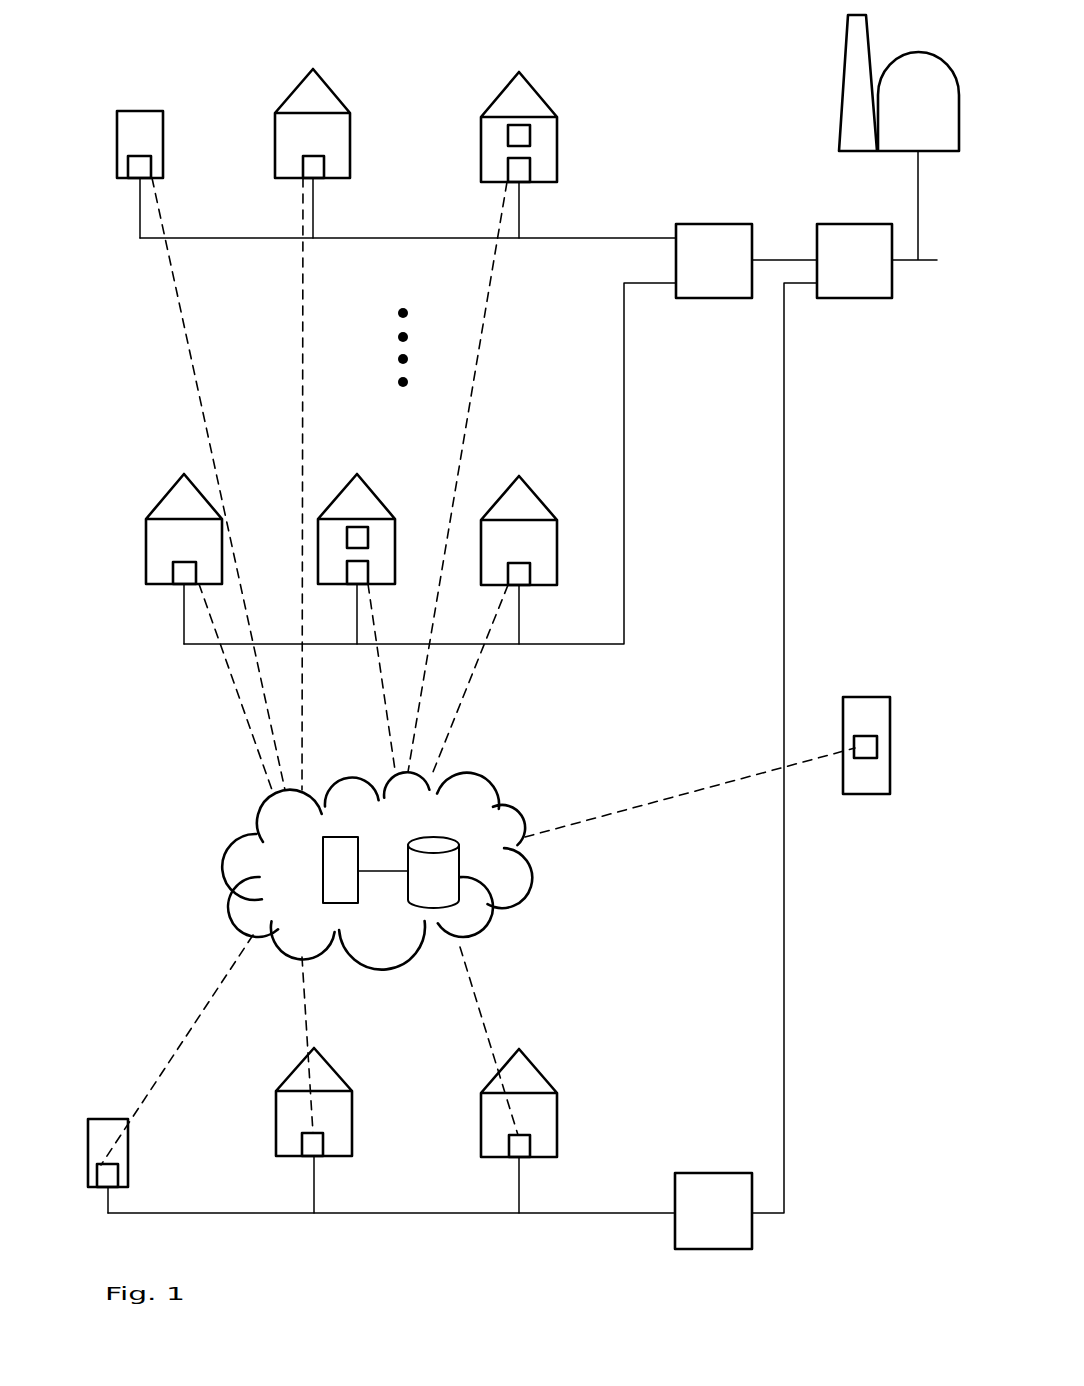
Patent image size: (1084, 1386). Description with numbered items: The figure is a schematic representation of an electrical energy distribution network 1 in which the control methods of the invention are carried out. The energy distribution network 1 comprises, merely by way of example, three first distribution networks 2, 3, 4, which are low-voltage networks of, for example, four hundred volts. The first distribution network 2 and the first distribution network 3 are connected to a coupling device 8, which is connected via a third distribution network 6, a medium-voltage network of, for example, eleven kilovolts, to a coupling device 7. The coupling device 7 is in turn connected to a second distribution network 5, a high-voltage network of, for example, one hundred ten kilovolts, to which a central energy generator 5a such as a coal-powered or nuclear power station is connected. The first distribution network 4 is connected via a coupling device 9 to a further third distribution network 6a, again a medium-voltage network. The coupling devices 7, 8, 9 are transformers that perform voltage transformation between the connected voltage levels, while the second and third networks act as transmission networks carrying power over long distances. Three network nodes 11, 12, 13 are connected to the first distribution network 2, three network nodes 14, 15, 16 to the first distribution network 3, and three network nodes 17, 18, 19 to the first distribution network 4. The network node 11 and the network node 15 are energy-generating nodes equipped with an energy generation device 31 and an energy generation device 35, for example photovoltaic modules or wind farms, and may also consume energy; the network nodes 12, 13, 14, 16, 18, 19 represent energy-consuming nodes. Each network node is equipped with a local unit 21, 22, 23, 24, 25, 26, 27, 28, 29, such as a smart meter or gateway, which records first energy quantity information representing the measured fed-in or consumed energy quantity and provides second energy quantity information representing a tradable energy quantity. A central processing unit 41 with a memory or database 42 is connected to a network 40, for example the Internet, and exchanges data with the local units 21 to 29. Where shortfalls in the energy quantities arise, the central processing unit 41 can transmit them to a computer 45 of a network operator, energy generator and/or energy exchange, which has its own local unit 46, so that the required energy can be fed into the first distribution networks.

The energy distribution network 1 is at (691, 76).
The first distribution network 2 is at (620, 238).
The first distribution network 3 is at (625, 450).
The first distribution network 4 is at (632, 1213).
The second distribution network 5 is at (905, 262).
The central energy generator 5a is at (918, 52).
The third distribution network 6 is at (775, 260).
The third distribution network 6a is at (784, 530).
The coupling device 7 is at (855, 298).
The coupling device 8 is at (712, 224).
The coupling device 9 is at (715, 1173).
The network node 11 is at (540, 93).
The network node 12 is at (338, 97).
The network node 13 is at (163, 125).
The network node 14 is at (543, 502).
The network node 15 is at (380, 492).
The network node 16 is at (165, 497).
The network node 17 is at (543, 1075).
The network node 18 is at (340, 1080).
The network node 19 is at (88, 1140).
The local unit 21 is at (530, 170).
The local unit 22 is at (325, 172).
The local unit 23 is at (152, 168).
The local unit 24 is at (530, 573).
The local unit 25 is at (368, 570).
The local unit 26 is at (173, 572).
The local unit 27 is at (530, 1145).
The local unit 28 is at (323, 1147).
The local unit 29 is at (118, 1175).
The energy generation device 31 is at (508, 135).
The energy generation device 35 is at (347, 538).
The network 40 is at (248, 815).
The central processing unit 41 is at (323, 870).
The memory/database 42 is at (448, 838).
The computer 45 is at (890, 707).
The local unit 46 is at (877, 748).